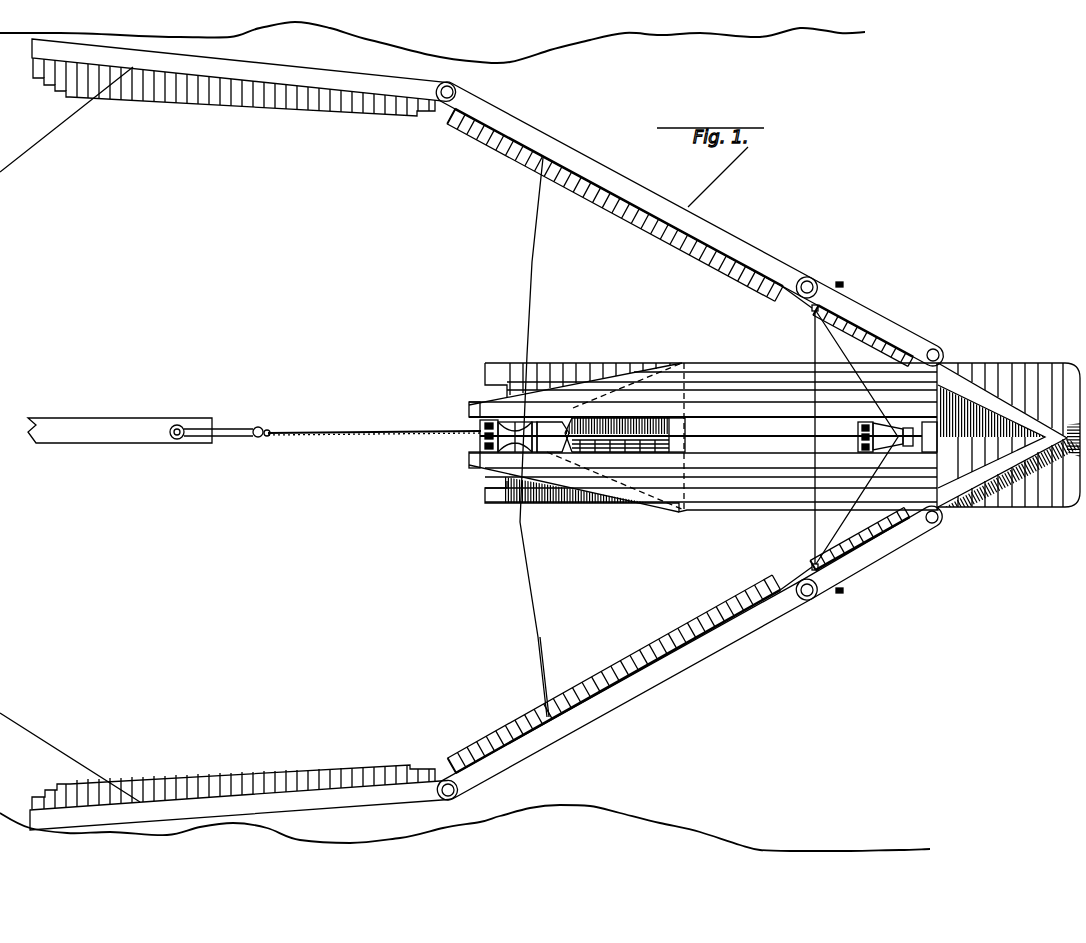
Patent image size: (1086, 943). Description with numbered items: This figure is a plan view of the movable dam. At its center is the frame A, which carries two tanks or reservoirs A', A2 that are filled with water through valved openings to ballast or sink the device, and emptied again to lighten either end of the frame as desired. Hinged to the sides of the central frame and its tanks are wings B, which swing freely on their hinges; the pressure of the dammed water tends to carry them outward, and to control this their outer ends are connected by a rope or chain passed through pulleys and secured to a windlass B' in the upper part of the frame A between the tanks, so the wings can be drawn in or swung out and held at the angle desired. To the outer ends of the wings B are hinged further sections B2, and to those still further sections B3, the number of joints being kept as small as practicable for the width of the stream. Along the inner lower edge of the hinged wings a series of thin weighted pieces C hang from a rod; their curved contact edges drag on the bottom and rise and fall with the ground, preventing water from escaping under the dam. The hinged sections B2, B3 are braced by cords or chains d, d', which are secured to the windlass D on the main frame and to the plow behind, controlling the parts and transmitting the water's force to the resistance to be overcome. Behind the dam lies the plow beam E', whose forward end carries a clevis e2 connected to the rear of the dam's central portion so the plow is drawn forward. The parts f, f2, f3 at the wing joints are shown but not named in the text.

The frame A is at (774, 429).
The tank A' is at (1009, 437).
The tank A2 is at (611, 435).
The wing B is at (869, 438).
The windlass B' is at (887, 438).
The hinged wing section B2 is at (626, 441).
The hinged wing section B3 is at (244, 434).
The hinged piece C is at (472, 433).
The windlass D is at (679, 428).
The brace cord d is at (534, 437).
The brace cord d' is at (70, 434).
The beam E' is at (120, 441).
The clevis e2 is at (332, 426).
The pivot joint f is at (621, 441).
The cable f2 is at (849, 437).
The pin f3 is at (842, 439).